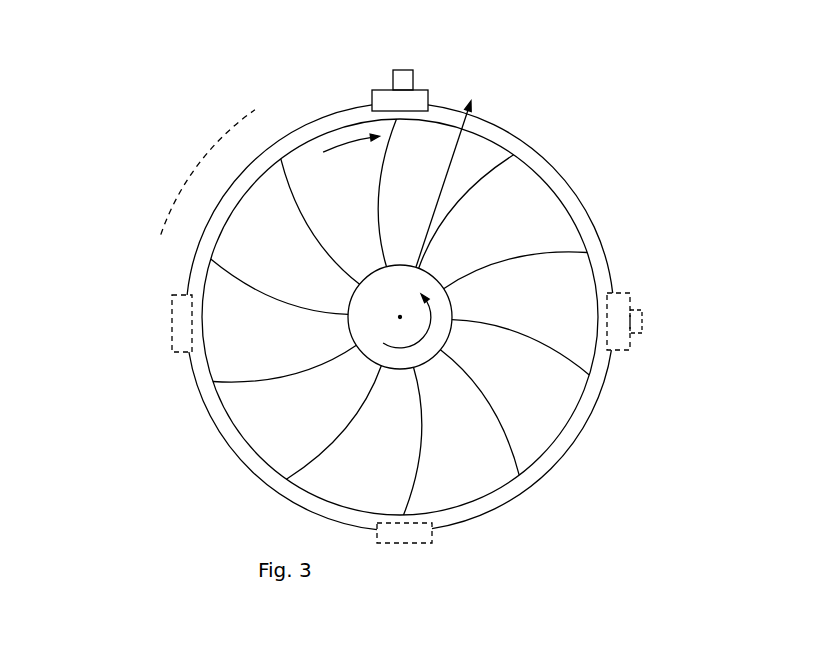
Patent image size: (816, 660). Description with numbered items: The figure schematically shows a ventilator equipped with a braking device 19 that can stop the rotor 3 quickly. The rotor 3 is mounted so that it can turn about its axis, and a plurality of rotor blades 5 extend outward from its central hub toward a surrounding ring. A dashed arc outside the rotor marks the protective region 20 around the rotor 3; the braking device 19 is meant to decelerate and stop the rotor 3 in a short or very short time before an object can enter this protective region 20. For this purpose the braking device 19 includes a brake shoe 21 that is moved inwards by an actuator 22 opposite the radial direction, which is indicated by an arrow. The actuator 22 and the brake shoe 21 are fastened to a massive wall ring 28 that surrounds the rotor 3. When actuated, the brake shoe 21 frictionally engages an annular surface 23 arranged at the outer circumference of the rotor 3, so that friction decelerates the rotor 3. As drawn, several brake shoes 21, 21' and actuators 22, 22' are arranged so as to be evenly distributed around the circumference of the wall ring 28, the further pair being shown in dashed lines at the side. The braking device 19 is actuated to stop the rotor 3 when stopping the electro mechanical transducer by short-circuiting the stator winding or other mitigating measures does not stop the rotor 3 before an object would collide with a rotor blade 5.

The braking device 19 is at (427, 286).
The protective region 20 is at (180, 186).
The brake shoe 21 is at (445, 76).
The actuator 22 is at (445, 52).
The brake shoe 21' is at (656, 313).
The actuator 22' is at (667, 323).
The annular surface 23 is at (580, 403).
The wall ring 28 is at (572, 450).
The rotor 3 is at (445, 288).
The rotor blades 5 is at (517, 175).